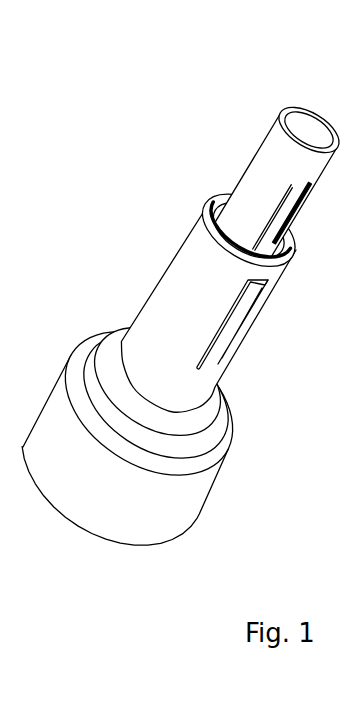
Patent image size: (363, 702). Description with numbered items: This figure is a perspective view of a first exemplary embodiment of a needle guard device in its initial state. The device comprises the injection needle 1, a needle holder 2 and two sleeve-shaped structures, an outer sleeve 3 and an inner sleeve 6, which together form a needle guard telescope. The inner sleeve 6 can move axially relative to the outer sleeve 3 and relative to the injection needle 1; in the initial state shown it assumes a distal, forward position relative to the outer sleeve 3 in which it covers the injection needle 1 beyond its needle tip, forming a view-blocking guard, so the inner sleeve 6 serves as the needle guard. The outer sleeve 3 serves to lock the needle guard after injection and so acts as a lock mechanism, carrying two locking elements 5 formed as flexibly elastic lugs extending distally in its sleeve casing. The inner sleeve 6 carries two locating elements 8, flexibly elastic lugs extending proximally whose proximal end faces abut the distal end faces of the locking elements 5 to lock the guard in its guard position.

The injection needle 1 is at (303, 138).
The needle holder 2 is at (103, 515).
The outer sleeve 3 is at (172, 283).
The locking element 5 is at (262, 285).
The inner sleeve 6 is at (258, 163).
The locating element 8 is at (282, 241).